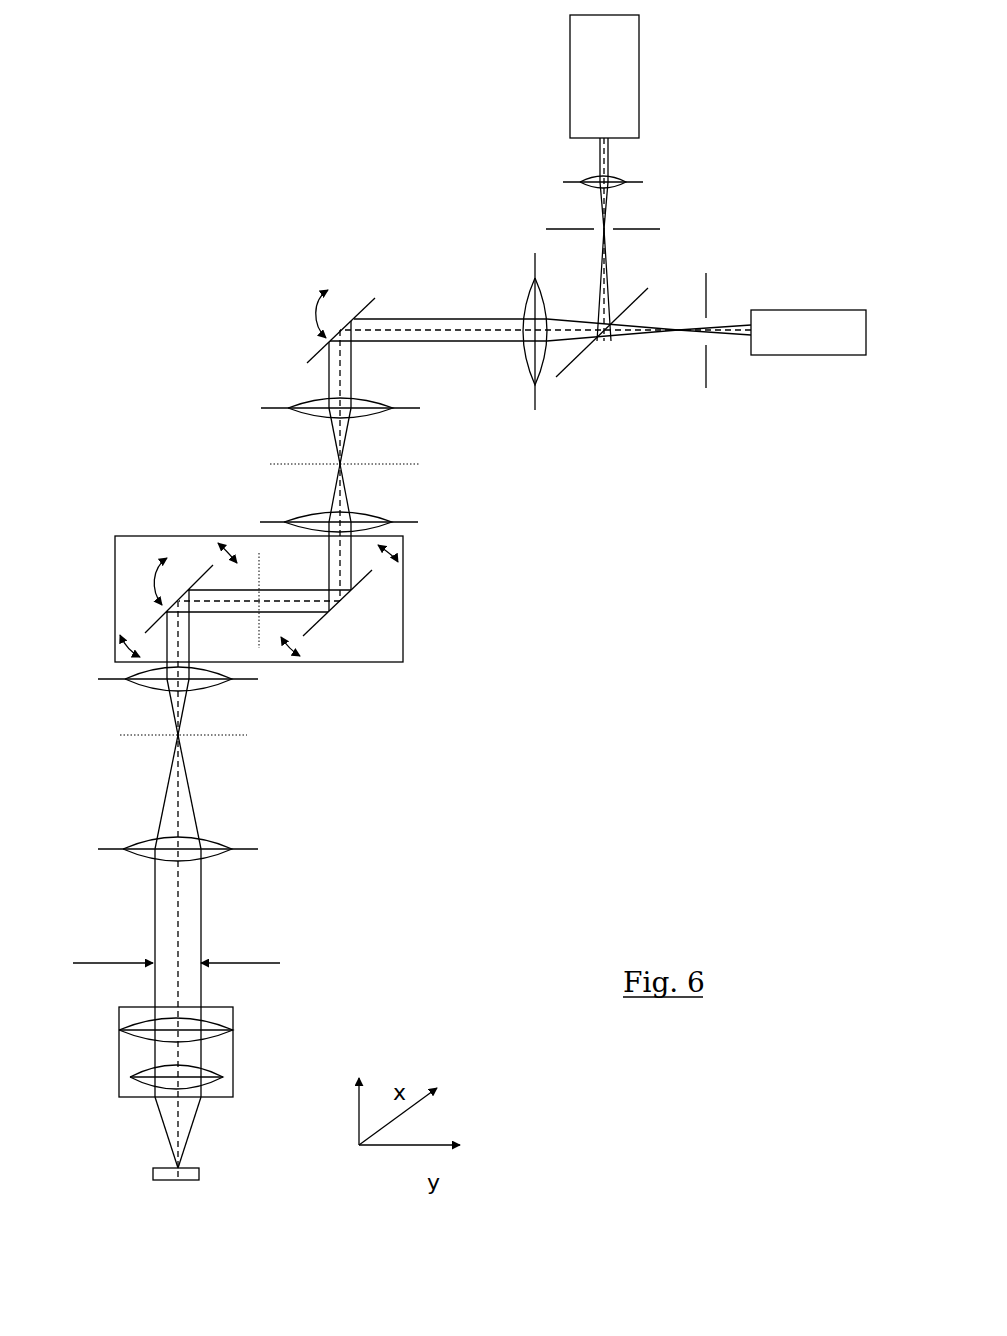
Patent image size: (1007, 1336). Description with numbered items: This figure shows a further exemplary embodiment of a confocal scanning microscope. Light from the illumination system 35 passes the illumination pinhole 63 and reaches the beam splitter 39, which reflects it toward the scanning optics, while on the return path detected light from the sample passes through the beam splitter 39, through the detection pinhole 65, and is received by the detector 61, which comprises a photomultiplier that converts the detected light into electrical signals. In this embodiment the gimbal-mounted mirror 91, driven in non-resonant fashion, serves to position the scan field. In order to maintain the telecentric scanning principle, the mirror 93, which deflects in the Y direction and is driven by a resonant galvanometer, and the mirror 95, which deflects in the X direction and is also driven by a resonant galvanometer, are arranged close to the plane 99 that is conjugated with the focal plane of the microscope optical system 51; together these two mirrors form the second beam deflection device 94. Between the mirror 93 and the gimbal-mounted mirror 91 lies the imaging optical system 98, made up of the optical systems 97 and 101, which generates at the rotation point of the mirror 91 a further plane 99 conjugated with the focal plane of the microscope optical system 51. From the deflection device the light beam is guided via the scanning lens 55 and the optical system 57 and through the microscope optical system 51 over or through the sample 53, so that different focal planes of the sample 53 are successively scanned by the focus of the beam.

The illumination system 35 is at (618, 82).
The illumination pinhole 63 is at (649, 229).
The detector 61 is at (800, 320).
The detection pinhole 65 is at (708, 363).
The beam splitter 39 is at (573, 363).
The gimbal-mounted mirror 91 is at (363, 303).
The optical system 101 is at (373, 404).
The imaging optical system 98 is at (388, 432).
The optical system 97 is at (315, 520).
The second beam deflection device 94 is at (382, 646).
The mirror 93 is at (363, 577).
The plane conjugated with the focal plane 99 is at (259, 580).
The mirror 95 is at (152, 620).
The scanning lens 55 is at (148, 680).
The optical system 57 is at (148, 846).
The microscope optical system 51 is at (210, 1052).
The sample 53 is at (182, 1173).